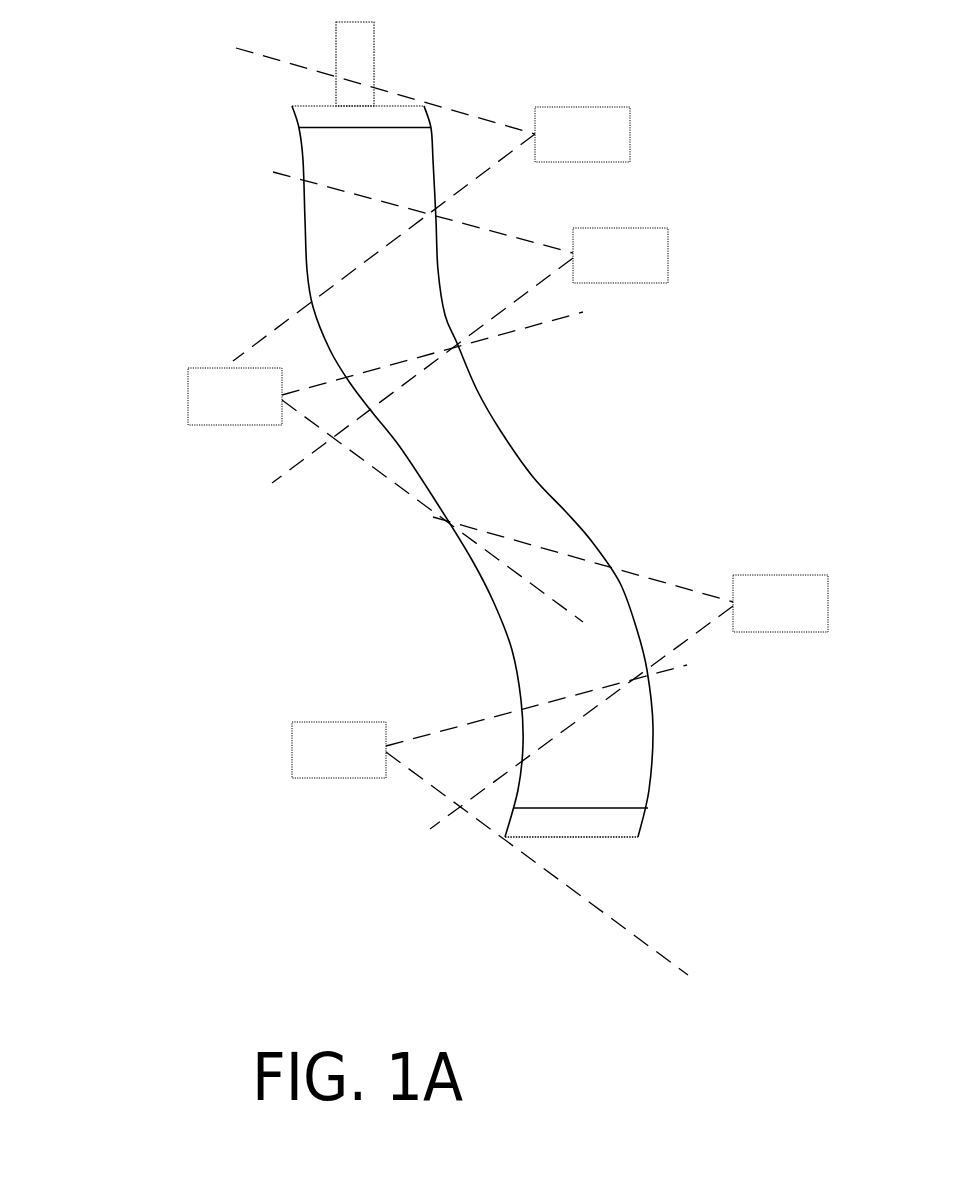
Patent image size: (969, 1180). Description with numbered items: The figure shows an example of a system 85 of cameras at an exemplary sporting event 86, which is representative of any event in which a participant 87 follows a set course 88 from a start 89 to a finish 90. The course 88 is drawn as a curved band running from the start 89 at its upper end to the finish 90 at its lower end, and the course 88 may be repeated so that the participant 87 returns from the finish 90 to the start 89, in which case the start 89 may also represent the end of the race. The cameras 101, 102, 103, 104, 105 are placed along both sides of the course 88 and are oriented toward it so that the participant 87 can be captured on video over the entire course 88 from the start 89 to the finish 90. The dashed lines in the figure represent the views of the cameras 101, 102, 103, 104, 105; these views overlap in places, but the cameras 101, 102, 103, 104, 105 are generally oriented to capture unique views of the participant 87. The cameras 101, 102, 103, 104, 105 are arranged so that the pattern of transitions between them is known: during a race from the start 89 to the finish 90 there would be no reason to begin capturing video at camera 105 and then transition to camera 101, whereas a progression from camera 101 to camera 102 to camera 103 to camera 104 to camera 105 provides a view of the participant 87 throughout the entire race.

The system of cameras 85 is at (182, 85).
The sporting event 86 is at (305, 152).
The participant 87 is at (374, 65).
The course 88 is at (305, 230).
The start 89 is at (424, 106).
The finish 90 is at (648, 808).
The camera 101 is at (431, 204).
The camera 102 is at (470, 327).
The camera 103 is at (385, 467).
The camera 104 is at (629, 673).
The camera 105 is at (490, 820).